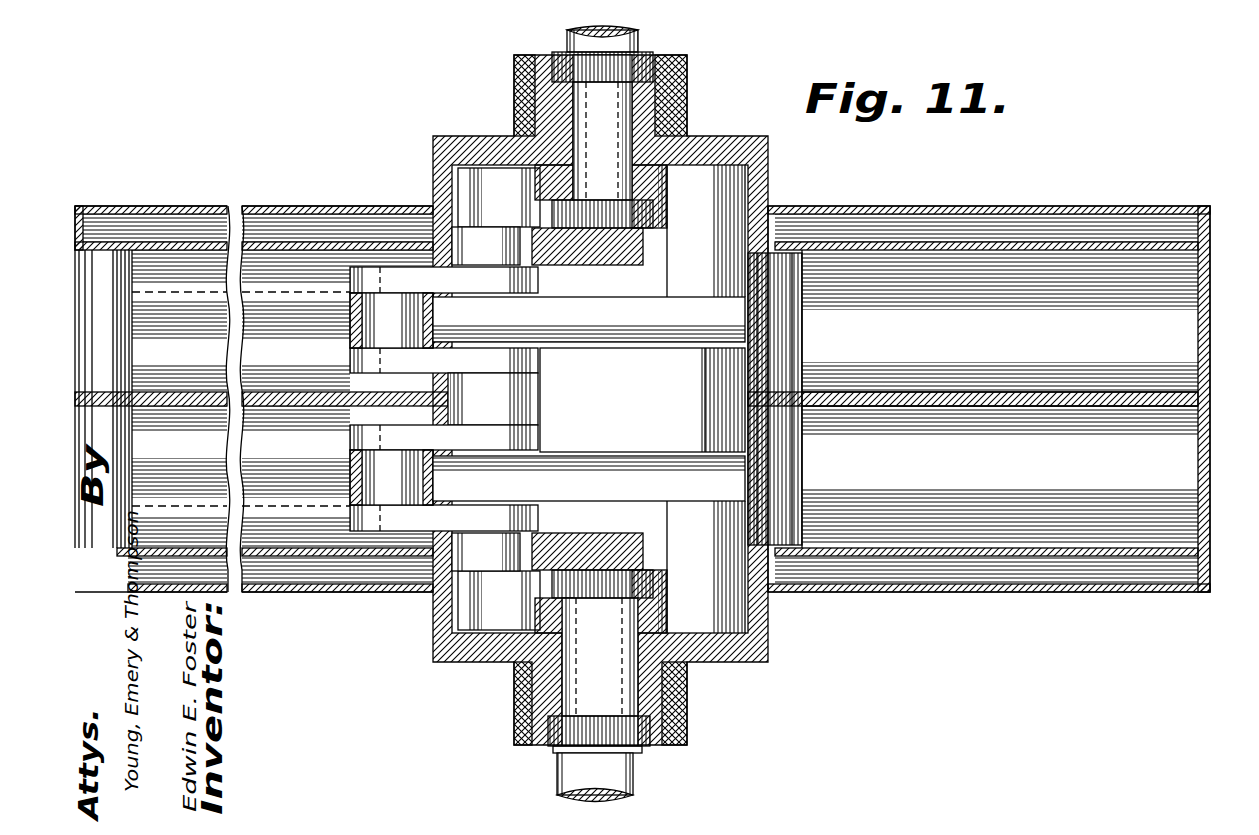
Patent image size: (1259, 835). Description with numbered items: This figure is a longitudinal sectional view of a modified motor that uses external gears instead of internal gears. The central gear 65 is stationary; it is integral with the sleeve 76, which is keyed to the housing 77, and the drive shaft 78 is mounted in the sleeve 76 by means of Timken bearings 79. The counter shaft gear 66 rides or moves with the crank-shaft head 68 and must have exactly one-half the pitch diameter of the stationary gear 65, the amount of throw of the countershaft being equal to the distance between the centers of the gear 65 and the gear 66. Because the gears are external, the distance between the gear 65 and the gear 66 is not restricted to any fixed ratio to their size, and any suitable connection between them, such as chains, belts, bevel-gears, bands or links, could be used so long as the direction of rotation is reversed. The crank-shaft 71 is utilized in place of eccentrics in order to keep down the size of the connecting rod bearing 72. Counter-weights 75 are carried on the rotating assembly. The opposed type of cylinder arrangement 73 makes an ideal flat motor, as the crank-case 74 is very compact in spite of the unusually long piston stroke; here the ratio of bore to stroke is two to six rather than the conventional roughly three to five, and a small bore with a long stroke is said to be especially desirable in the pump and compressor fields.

The central gear 65 is at (766, 138).
The counter shaft gear 66 is at (465, 190).
The crank-shaft head 68 is at (596, 266).
The crank-shaft 71 is at (538, 362).
The connecting rod bearing 72 is at (350, 335).
The cylinder arrangement 73 is at (1210, 370).
The crank-case 74 is at (589, 399).
The counter-weights 75 is at (720, 268).
The sleeve 76 is at (688, 90).
The housing 77 is at (516, 82).
The drive shaft 78 is at (636, 38).
The Timken bearings 79 is at (560, 56).